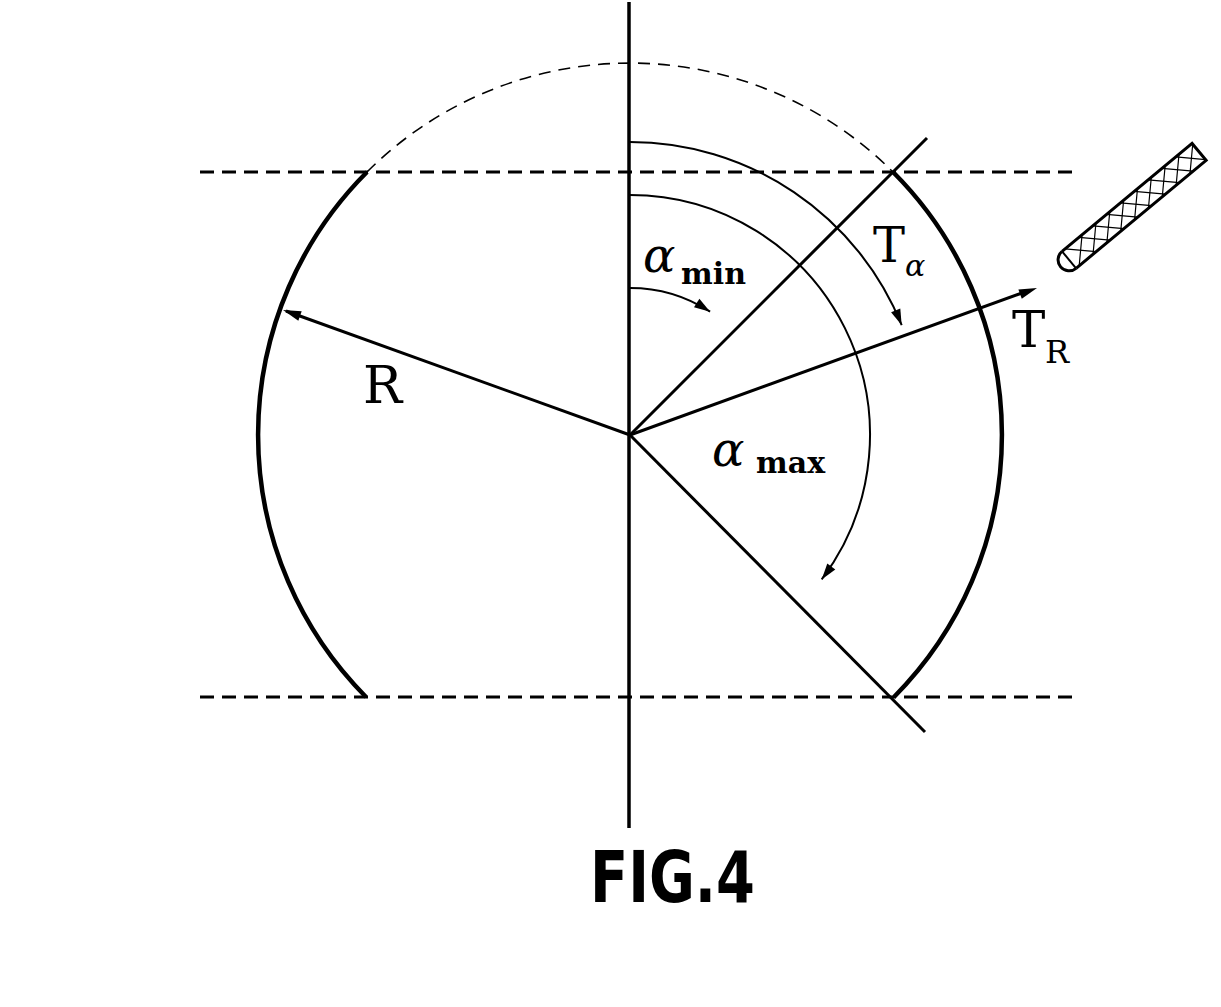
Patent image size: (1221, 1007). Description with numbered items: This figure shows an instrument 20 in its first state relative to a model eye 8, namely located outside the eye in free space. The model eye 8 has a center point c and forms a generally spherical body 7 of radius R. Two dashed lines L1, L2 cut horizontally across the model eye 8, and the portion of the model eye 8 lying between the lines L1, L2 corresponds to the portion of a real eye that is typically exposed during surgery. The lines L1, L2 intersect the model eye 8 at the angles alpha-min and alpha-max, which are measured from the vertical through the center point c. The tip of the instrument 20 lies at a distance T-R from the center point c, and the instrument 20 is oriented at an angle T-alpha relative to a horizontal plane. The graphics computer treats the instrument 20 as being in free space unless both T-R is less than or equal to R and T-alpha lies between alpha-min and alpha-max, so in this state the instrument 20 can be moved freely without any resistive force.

The spherical body 7 is at (430, 120).
The model eye 8 is at (896, 101).
The instrument 20 is at (1158, 178).
The center point c is at (630, 435).
The dashed line L1 is at (962, 172).
The dashed line L2 is at (1027, 697).